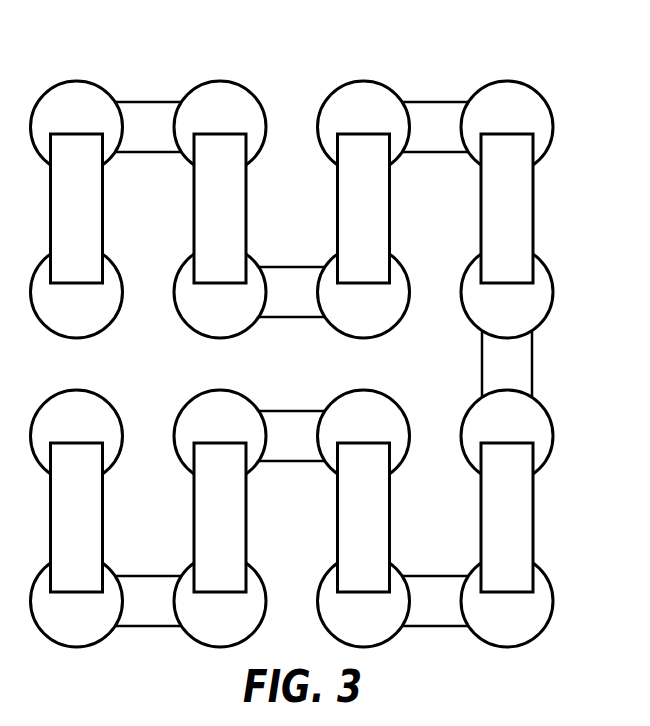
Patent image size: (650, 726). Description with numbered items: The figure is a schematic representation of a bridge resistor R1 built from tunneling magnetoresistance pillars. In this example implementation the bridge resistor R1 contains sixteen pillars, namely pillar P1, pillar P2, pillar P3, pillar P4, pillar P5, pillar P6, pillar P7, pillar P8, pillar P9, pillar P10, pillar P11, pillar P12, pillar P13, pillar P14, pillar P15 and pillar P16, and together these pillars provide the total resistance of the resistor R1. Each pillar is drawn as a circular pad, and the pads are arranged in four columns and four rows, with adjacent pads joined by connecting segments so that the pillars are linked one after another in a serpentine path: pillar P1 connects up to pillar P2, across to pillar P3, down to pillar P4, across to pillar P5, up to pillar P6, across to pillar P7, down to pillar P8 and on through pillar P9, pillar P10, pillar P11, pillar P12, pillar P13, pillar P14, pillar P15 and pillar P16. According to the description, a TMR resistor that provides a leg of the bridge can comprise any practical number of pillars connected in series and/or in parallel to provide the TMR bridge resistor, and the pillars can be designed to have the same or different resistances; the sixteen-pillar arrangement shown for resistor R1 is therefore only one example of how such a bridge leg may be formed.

The bridge resistor R1 is at (522, 66).
The pillar P1 is at (77, 292).
The pillar P2 is at (77, 127).
The pillar P3 is at (220, 127).
The pillar P4 is at (220, 292).
The pillar P5 is at (364, 292).
The pillar P6 is at (364, 127).
The pillar P7 is at (507, 127).
The pillar P8 is at (507, 292).
The pillar P9 is at (507, 436).
The pillar P10 is at (507, 601).
The pillar P11 is at (364, 601).
The pillar P12 is at (364, 436).
The pillar P13 is at (220, 436).
The pillar P14 is at (220, 601).
The pillar P15 is at (77, 601).
The pillar P16 is at (77, 436).